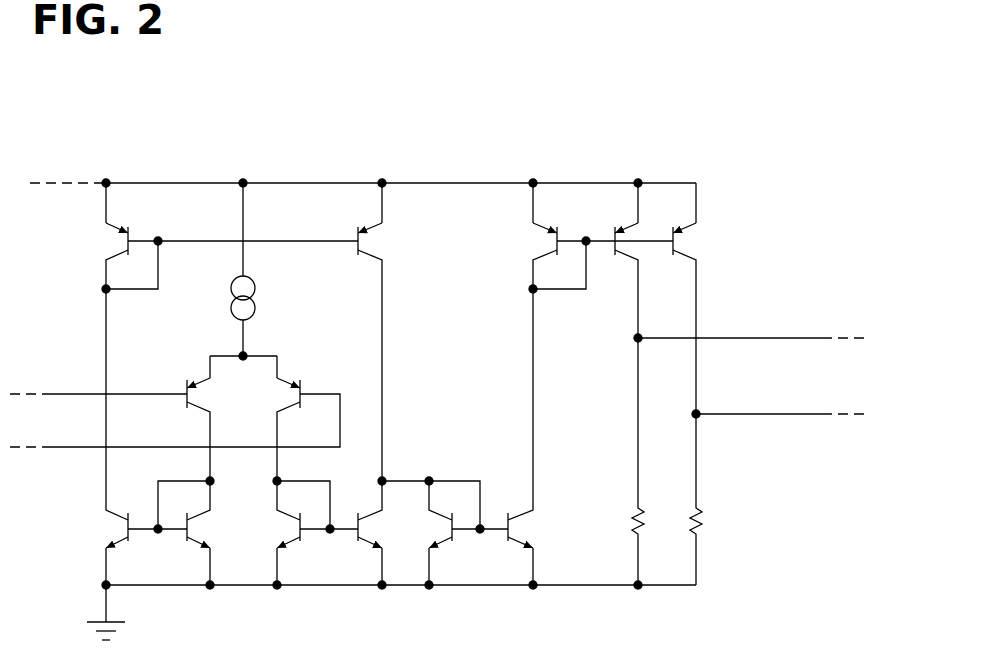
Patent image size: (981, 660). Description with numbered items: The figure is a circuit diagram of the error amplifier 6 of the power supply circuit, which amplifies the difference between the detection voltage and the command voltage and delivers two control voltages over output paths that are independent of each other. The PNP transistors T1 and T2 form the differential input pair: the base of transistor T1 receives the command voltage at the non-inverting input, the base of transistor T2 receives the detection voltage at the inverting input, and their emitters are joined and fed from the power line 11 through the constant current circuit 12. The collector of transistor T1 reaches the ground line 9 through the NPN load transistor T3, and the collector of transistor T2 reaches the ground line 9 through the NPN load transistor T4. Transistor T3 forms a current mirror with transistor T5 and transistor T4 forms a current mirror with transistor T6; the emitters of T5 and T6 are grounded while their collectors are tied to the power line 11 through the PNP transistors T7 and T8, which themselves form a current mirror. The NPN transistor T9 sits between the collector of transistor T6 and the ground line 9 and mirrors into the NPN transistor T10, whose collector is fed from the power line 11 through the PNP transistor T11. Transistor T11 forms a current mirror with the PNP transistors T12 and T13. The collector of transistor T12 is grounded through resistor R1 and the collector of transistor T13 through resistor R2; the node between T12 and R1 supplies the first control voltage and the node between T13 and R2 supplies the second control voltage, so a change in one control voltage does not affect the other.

The error amplifier 6 is at (450, 132).
The power line 11 is at (199, 183).
The constant current circuit 12 is at (255, 300).
The ground line 9 is at (108, 604).
The transistor T1 is at (283, 396).
The transistor T2 is at (208, 384).
The transistor T3 is at (203, 530).
The transistor T4 is at (270, 526).
The transistor T5 is at (120, 512).
The transistor T6 is at (374, 512).
The transistor T7 is at (134, 234).
The transistor T8 is at (364, 232).
The transistor T9 is at (444, 521).
The transistor T10 is at (534, 532).
The transistor T11 is at (550, 248).
The transistor T12 is at (624, 229).
The transistor T13 is at (683, 232).
The resistor R1 is at (633, 519).
The resistor R2 is at (687, 516).